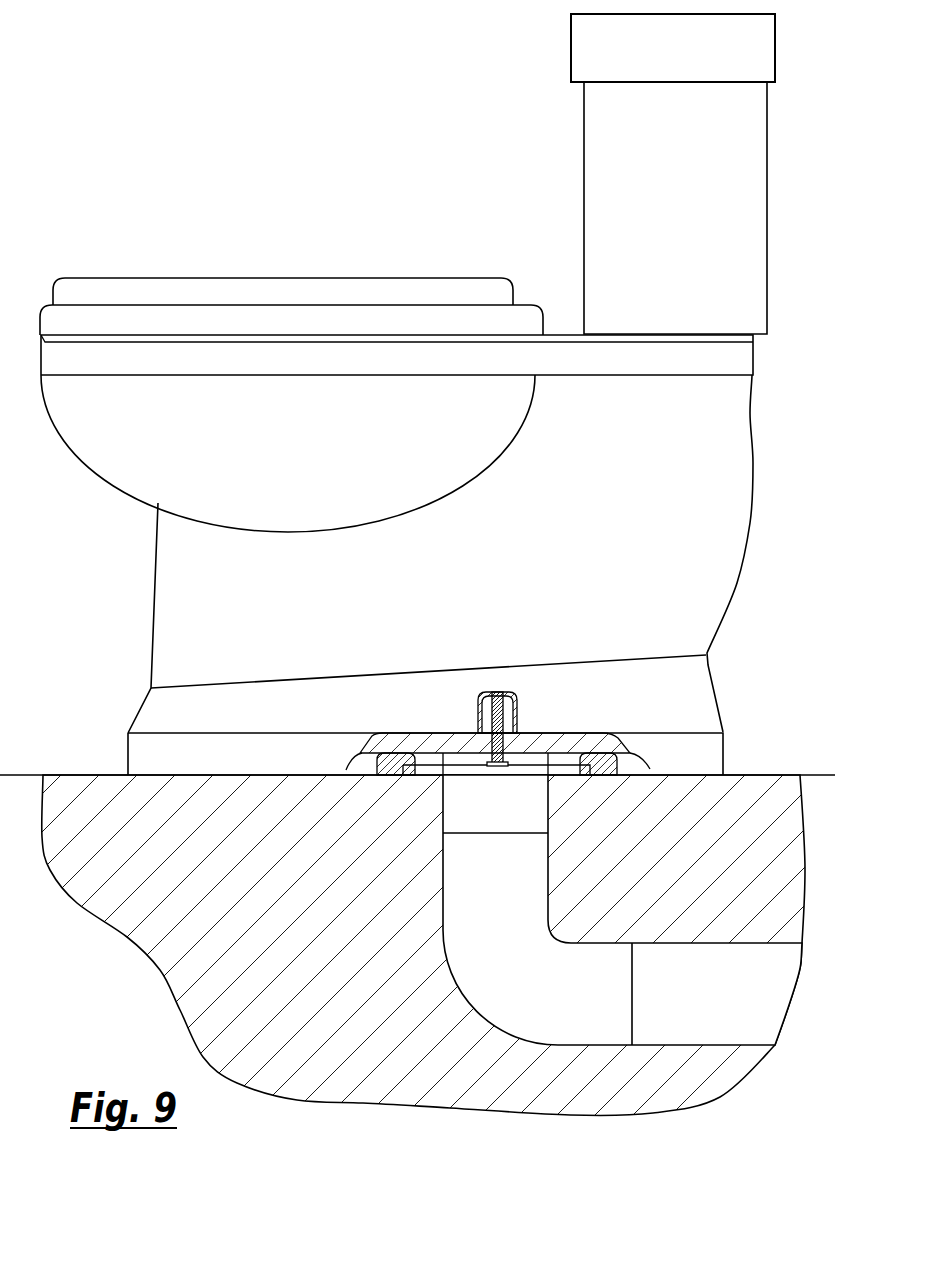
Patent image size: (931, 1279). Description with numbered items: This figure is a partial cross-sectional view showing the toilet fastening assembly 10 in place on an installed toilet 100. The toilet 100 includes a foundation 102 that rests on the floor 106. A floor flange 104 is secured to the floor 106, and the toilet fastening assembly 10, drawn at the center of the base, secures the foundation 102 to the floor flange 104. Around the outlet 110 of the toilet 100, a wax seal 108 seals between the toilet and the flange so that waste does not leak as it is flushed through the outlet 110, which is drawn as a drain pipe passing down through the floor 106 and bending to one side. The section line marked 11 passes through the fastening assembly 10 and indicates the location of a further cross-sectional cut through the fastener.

The toilet fastening assembly 10 is at (534, 712).
The section line 11 is at (548, 670).
The toilet 100 is at (336, 462).
The foundation 102 is at (138, 753).
The floor flange 104 is at (573, 770).
The floor 106 is at (78, 812).
The wax seal 108 is at (633, 765).
The outlet 110 is at (547, 1000).